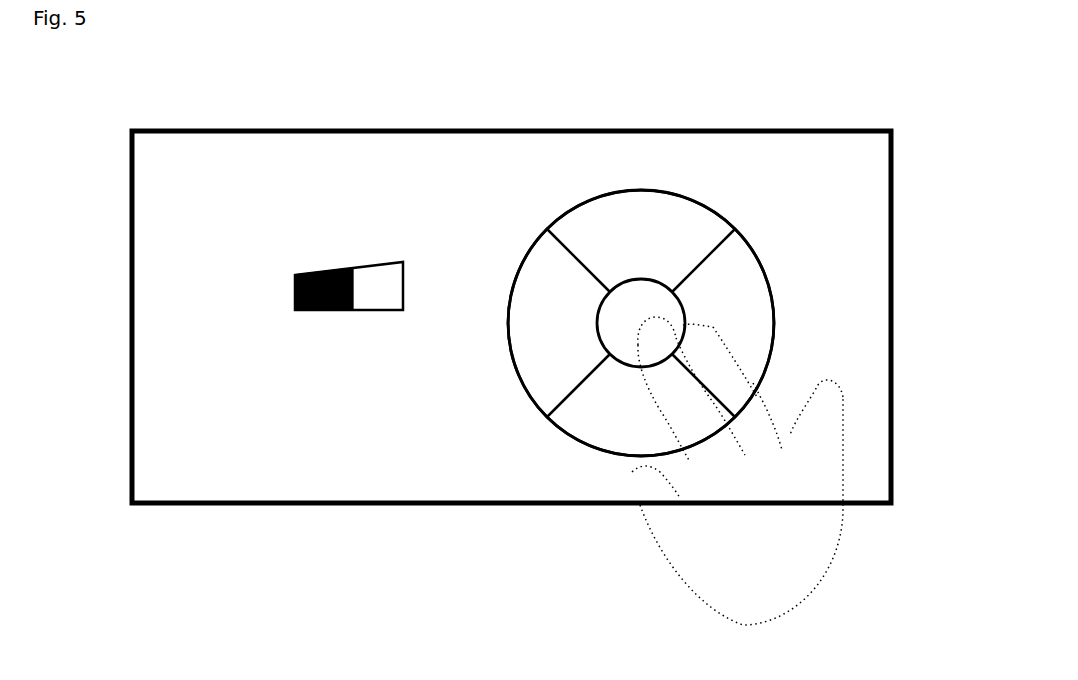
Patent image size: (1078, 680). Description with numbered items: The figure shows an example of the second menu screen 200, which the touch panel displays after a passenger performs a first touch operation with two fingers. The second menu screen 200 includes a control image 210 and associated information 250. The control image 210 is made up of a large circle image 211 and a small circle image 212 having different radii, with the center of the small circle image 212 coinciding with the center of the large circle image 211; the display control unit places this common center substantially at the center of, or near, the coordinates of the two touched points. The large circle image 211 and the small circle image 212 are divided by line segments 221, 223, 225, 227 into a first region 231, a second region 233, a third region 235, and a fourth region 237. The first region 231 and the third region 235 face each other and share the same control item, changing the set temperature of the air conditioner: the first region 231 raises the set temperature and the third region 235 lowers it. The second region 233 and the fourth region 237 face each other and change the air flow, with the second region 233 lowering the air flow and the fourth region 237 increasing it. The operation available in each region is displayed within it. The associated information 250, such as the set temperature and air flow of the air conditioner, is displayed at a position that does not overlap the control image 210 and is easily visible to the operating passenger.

The second menu screen 200 is at (247, 130).
The control image 210 is at (752, 146).
The large circle image 211 is at (618, 191).
The small circle image 212 is at (687, 296).
The line segment 221 is at (725, 218).
The line segment 223 is at (559, 222).
The line segment 225 is at (568, 409).
The line segment 227 is at (751, 394).
The first region 231 is at (658, 207).
The second region 233 is at (517, 370).
The third region 235 is at (612, 455).
The fourth region 237 is at (745, 251).
The associated information 250 is at (166, 317).